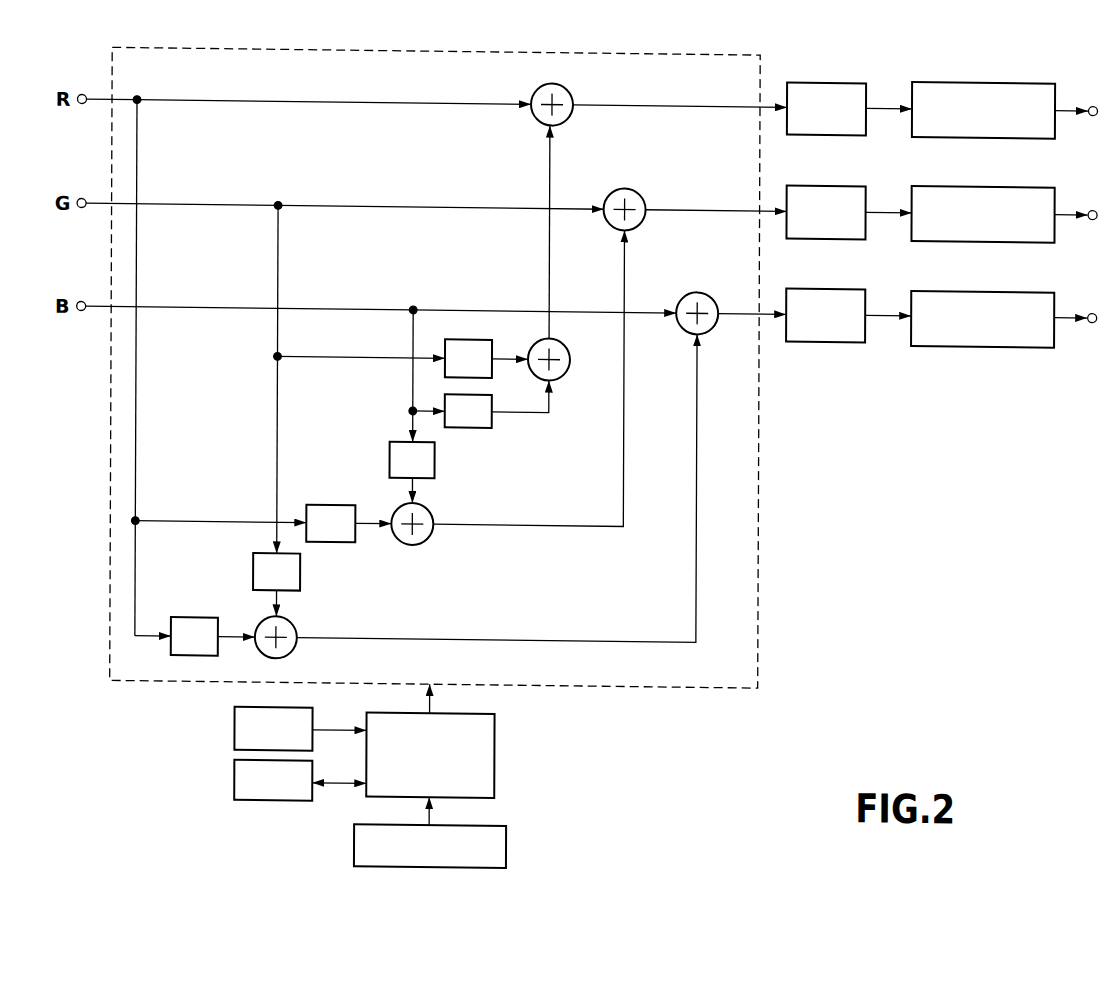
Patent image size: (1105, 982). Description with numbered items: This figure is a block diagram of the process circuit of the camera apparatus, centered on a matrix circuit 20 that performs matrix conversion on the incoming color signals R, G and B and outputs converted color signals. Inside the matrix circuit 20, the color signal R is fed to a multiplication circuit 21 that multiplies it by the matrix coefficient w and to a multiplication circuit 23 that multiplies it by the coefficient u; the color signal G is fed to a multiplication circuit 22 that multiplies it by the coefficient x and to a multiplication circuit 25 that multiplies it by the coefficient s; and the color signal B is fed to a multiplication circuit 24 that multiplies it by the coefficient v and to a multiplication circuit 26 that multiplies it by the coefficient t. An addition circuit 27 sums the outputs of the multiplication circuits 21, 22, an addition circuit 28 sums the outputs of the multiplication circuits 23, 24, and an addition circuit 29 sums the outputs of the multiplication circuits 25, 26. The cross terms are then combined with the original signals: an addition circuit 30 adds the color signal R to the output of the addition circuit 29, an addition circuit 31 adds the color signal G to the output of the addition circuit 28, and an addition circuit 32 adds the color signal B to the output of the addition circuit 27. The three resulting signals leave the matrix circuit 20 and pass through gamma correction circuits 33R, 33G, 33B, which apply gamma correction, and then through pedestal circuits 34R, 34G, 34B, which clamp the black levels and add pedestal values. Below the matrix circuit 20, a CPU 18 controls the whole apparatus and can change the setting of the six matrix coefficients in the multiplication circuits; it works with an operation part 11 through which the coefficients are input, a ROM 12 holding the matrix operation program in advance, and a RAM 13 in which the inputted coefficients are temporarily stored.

The operation part 11 is at (357, 846).
The ROM 12 is at (237, 729).
The RAM 13 is at (237, 781).
The CPU 18 is at (497, 755).
The matrix circuit 20 is at (268, 47).
The multiplication circuit 21 is at (202, 616).
The multiplication circuit 22 is at (302, 570).
The multiplication circuit 23 is at (333, 502).
The multiplication circuit 24 is at (436, 457).
The multiplication circuit 25 is at (460, 335).
The multiplication circuit 26 is at (493, 420).
The addition circuit 27 is at (292, 620).
The addition circuit 28 is at (428, 504).
The addition circuit 29 is at (571, 354).
The addition circuit 30 is at (567, 113).
The addition circuit 31 is at (640, 217).
The addition circuit 32 is at (713, 320).
The gamma correction circuit 33R is at (815, 74).
The gamma correction circuit 33G is at (815, 177).
The gamma correction circuit 33B is at (815, 280).
The pedestal circuit 34R is at (960, 72).
The pedestal circuit 34G is at (960, 176).
The pedestal circuit 34B is at (960, 281).